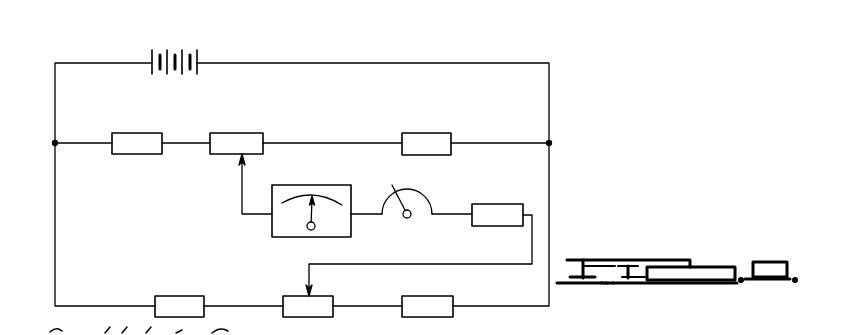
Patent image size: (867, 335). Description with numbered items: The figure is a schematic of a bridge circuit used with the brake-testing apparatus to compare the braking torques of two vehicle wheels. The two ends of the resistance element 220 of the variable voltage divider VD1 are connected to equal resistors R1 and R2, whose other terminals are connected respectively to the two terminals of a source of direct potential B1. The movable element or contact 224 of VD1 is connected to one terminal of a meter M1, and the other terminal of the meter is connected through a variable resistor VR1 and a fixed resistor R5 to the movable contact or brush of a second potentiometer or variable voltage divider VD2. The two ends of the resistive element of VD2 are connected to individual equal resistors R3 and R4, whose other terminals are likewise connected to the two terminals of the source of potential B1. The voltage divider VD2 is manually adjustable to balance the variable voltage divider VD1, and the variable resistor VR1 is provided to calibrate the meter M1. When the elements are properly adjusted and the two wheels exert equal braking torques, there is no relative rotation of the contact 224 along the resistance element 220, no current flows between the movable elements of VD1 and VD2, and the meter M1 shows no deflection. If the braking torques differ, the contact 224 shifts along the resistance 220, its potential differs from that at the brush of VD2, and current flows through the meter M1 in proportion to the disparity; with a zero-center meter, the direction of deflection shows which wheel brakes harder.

The source of direct potential B1 is at (179, 52).
The resistor R1 is at (137, 143).
The variable voltage divider VD1 is at (240, 125).
The resistance element 220 is at (246, 133).
The movable element or contact 224 is at (240, 159).
The resistor R2 is at (426, 144).
The meter M1 is at (331, 165).
The variable resistor VR1 is at (428, 186).
The fixed resistor R5 is at (497, 215).
The resistor R3 is at (179, 306).
The variable voltage divider VD2 is at (308, 306).
The resistor R4 is at (427, 306).